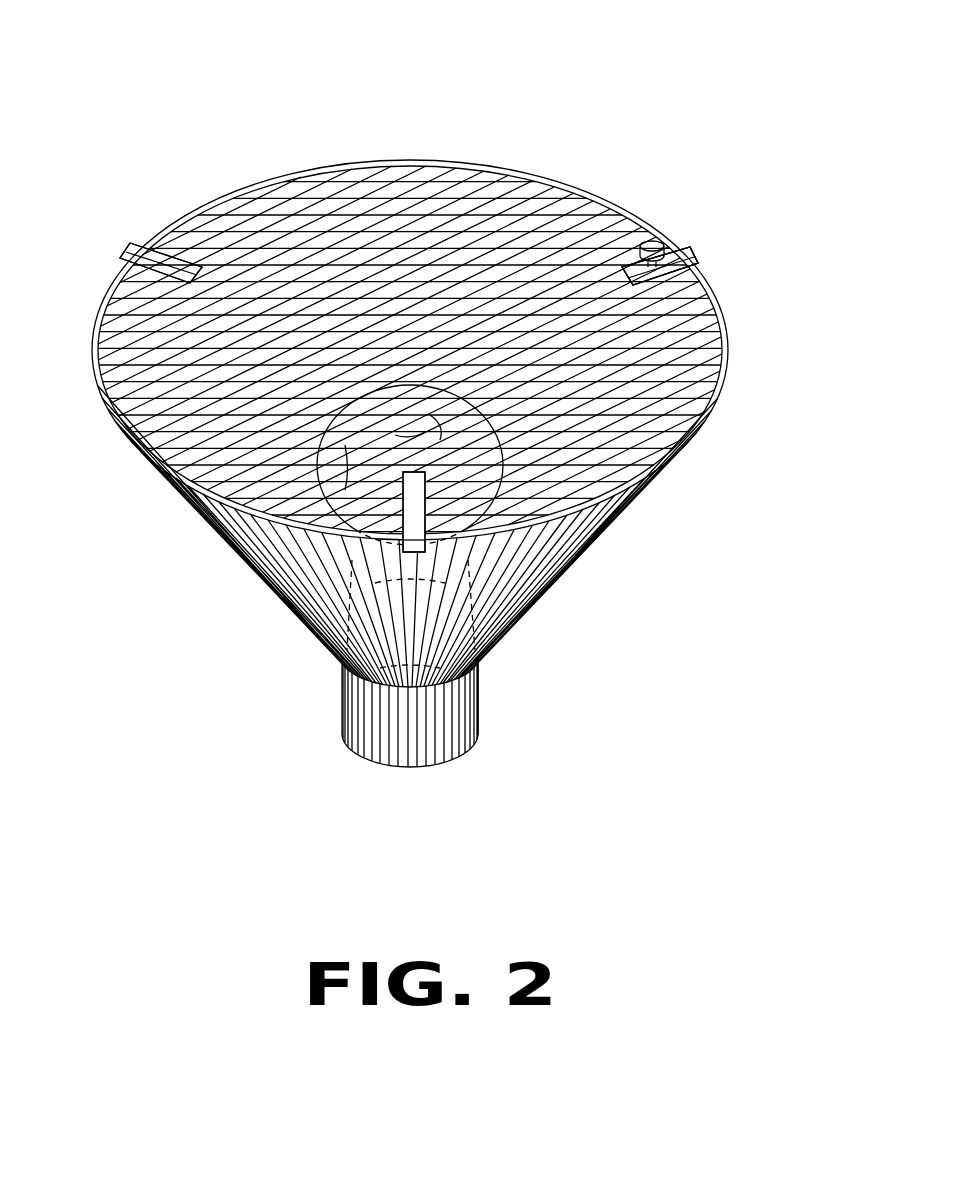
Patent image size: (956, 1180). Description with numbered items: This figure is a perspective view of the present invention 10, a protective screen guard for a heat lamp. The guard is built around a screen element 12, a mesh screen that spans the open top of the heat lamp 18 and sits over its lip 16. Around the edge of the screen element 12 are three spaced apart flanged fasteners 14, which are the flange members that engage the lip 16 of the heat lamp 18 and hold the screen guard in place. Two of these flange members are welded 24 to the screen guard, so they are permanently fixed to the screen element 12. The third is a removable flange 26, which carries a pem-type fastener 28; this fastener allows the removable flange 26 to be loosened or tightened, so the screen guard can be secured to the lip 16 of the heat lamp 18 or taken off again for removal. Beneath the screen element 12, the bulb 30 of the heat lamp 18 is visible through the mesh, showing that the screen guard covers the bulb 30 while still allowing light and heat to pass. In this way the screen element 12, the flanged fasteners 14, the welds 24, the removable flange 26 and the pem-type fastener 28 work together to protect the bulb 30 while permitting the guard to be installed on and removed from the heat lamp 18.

The present invention 10 is at (470, 128).
The screen element 12 is at (270, 238).
The flanged fasteners 14 is at (128, 252).
The lip 16 is at (697, 438).
The heat lamp 18 is at (257, 567).
The weld 24 is at (172, 258).
The removable flange 26 is at (692, 252).
The pem-type fastener 28 is at (645, 246).
The bulb 30 is at (398, 403).